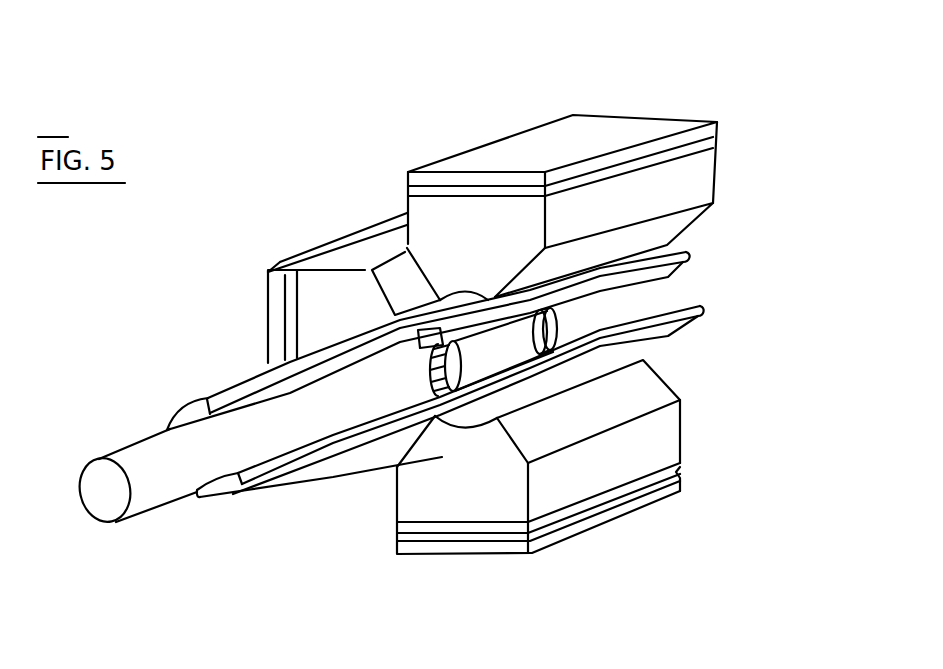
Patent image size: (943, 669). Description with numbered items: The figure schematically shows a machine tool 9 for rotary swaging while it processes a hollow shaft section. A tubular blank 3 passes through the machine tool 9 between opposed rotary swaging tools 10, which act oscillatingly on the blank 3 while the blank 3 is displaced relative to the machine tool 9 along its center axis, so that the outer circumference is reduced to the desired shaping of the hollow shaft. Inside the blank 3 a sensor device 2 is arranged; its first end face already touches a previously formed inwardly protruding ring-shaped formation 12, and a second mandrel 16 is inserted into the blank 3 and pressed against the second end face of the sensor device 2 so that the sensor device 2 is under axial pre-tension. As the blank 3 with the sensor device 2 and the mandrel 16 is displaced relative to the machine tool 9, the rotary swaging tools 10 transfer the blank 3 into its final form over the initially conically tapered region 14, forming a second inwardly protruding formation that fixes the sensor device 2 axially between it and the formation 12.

The machine tool 9 is at (786, 107).
The rotary swaging tools 10 is at (705, 177).
The tubular blank 3 is at (670, 307).
The second mandrel 16 is at (280, 437).
The conically tapered region 14 is at (418, 337).
The sensor device 2 is at (508, 353).
The inwardly protruding ring-shaped formation 12 is at (572, 303).